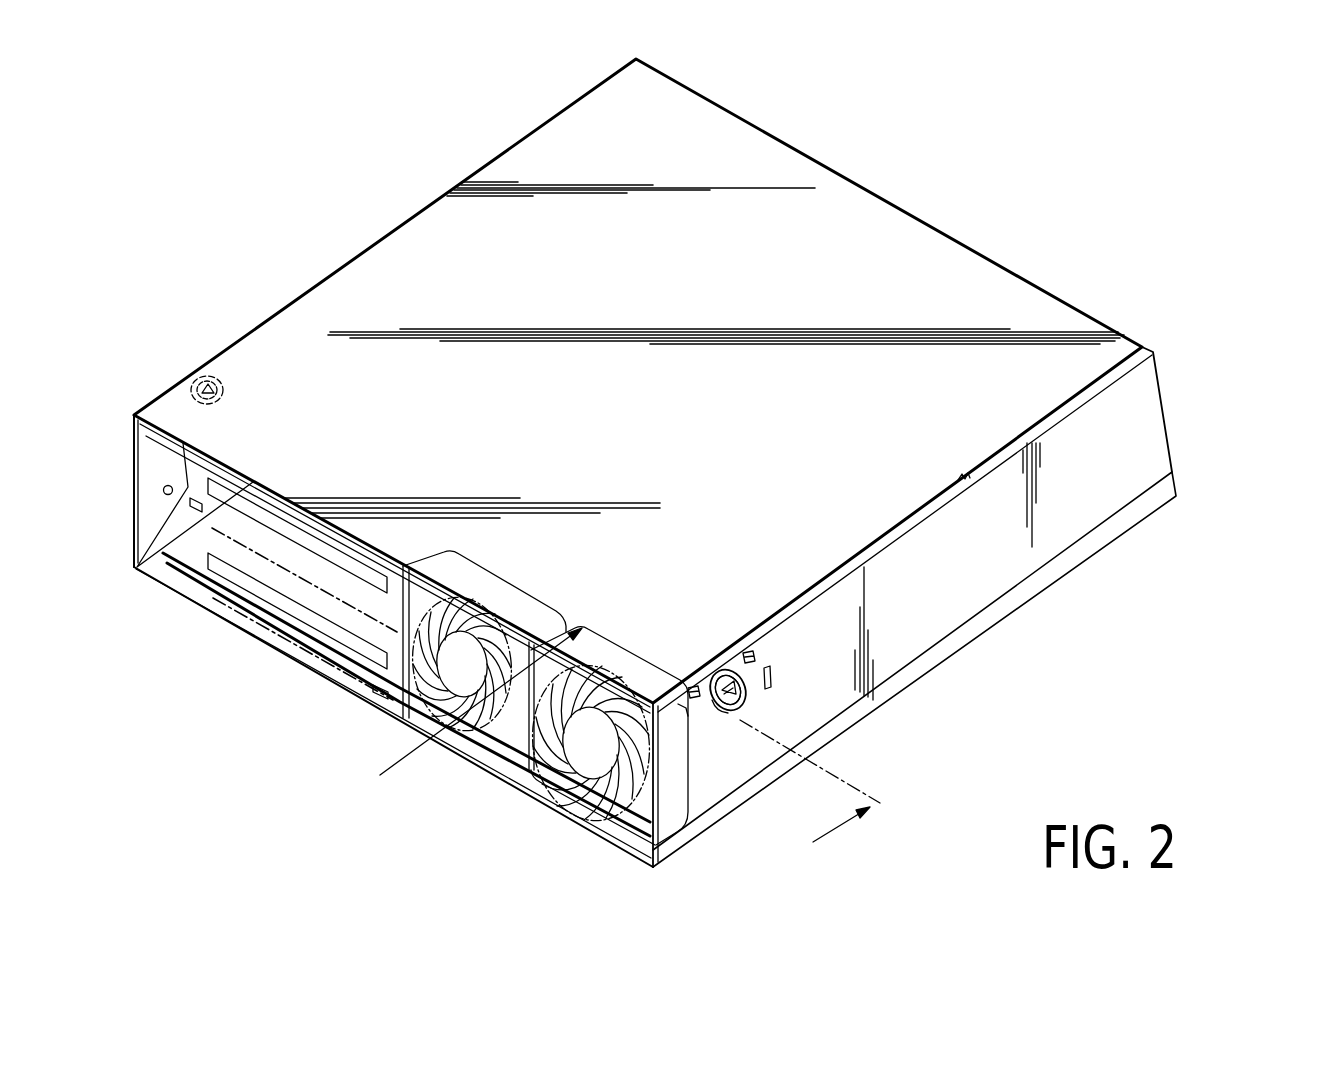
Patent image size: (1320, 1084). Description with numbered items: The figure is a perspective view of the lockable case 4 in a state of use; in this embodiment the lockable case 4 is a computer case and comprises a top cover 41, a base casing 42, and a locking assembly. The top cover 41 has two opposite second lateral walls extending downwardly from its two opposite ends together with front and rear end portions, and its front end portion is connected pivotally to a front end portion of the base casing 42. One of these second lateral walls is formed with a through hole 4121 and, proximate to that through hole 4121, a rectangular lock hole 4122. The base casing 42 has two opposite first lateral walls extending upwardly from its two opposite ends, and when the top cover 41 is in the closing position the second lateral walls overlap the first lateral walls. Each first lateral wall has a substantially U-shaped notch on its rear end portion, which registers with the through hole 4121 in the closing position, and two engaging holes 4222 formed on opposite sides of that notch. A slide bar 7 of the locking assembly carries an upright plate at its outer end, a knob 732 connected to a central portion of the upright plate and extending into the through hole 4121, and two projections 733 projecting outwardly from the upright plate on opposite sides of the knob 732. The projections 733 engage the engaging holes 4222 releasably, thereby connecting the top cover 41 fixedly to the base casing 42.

The lockable case 4 is at (1150, 339).
The top cover 41 is at (1147, 427).
The base casing 42 is at (1168, 485).
The slide bar 7 is at (727, 645).
The knob 732 is at (200, 372).
The projection 733 is at (684, 714).
The through hole 4121 is at (722, 708).
The rectangular lock hole 4122 is at (772, 676).
The engaging hole 4222 is at (690, 686).